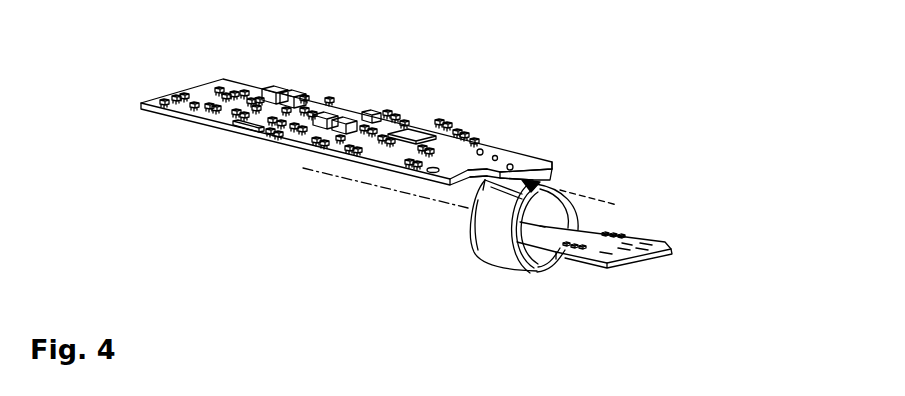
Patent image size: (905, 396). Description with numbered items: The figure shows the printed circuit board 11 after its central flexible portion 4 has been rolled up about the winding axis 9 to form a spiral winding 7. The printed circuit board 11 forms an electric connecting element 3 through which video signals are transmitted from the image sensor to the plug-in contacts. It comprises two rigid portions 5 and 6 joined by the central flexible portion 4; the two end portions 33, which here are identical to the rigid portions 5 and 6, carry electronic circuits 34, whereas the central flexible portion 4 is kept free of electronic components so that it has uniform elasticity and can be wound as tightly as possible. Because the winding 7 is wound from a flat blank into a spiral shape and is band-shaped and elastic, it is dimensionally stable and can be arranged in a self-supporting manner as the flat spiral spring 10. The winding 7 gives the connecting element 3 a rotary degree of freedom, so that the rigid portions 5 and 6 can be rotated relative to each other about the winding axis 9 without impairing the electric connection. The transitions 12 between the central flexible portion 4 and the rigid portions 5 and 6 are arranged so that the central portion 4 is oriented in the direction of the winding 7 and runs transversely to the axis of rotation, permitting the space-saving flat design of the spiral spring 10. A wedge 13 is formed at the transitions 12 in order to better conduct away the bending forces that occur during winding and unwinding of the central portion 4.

The electric connecting element 3 is at (640, 253).
The central flexible portion 4 is at (528, 268).
The first rigid portion 5 is at (570, 205).
The second rigid portion 6 is at (527, 165).
The spiral winding 7 is at (478, 212).
The winding axis 9 is at (376, 186).
The spiral spring 10 is at (483, 243).
The printed circuit board 11 is at (433, 95).
The transitions 12 is at (501, 182).
The wedge 13 is at (536, 185).
The end portions 33 is at (193, 108).
The electronic circuits 34 is at (277, 102).